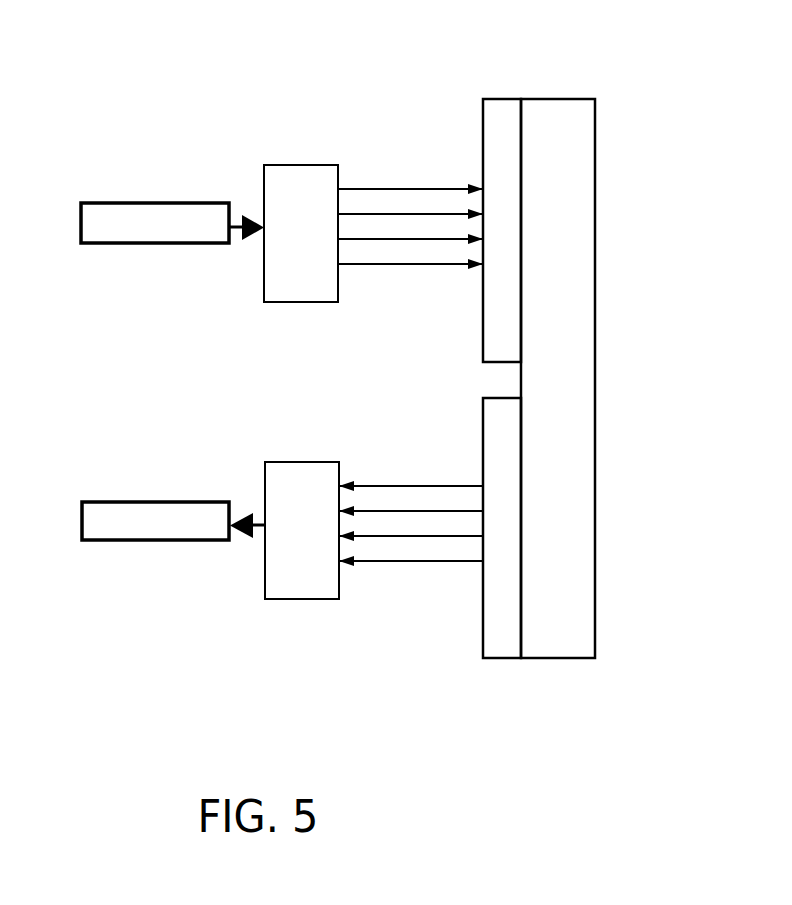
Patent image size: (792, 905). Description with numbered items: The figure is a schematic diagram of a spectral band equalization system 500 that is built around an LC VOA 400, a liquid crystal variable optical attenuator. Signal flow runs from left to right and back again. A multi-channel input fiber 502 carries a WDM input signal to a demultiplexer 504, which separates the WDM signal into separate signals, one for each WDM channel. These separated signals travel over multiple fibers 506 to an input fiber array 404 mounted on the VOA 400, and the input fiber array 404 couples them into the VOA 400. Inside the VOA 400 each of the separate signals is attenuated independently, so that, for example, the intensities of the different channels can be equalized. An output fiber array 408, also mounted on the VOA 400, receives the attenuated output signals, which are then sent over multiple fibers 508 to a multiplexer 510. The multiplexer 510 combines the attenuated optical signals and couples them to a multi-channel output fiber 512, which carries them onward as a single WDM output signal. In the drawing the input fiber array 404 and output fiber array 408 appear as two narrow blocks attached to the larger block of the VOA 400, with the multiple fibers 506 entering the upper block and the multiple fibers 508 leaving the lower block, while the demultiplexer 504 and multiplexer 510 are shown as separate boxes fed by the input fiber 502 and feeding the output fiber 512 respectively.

The LC VOA 400 is at (557, 99).
The input fiber array 404 is at (497, 150).
The output fiber array 408 is at (497, 620).
The spectral band equalization system 500 is at (705, 147).
The multi-channel input fiber 502 is at (118, 230).
The demultiplexer 504 is at (288, 163).
The multiple fibers 506 is at (411, 243).
The multiple fibers 508 is at (411, 506).
The multiplexer 510 is at (302, 462).
The multi-channel output fiber 512 is at (167, 500).